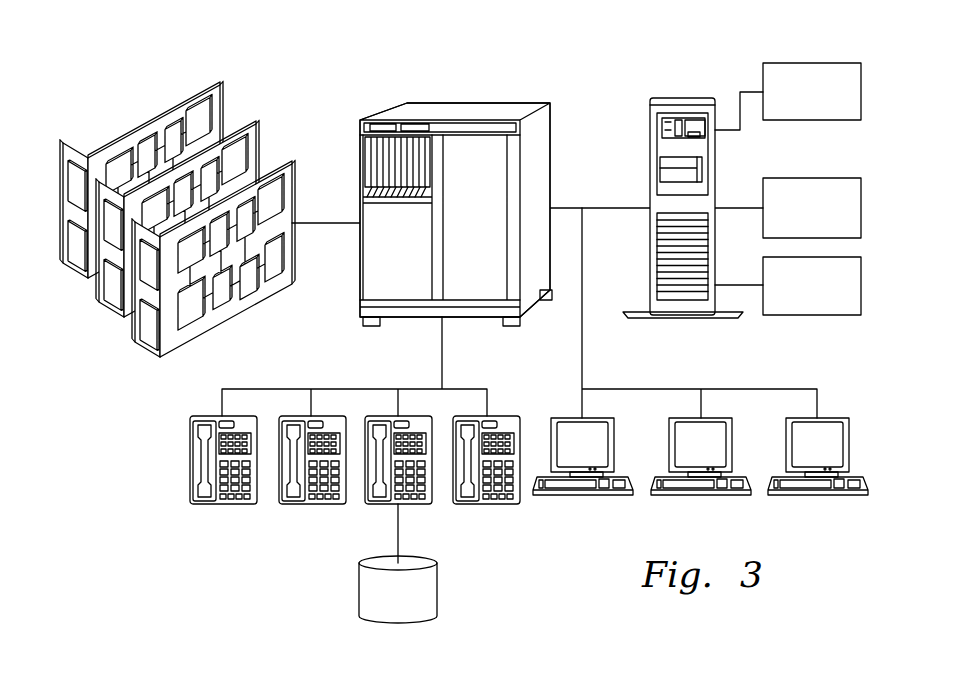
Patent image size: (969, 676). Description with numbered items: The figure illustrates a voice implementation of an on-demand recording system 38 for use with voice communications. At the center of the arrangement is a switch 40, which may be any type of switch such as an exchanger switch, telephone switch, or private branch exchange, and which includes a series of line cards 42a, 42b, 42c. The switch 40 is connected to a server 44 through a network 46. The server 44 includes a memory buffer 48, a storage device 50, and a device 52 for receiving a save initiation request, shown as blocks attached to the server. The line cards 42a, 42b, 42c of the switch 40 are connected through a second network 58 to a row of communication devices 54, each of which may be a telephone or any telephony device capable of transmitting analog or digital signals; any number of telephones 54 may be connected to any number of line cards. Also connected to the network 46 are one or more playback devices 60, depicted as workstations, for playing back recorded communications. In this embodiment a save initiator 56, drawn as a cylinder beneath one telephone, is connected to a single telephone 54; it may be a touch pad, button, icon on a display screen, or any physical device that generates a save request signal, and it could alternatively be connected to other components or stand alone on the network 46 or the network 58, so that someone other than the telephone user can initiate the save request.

The on-demand recording system 38 is at (597, 96).
The switch 40 is at (483, 110).
The line card 42a is at (221, 101).
The line card 42b is at (257, 140).
The line card 42c is at (293, 180).
The server 44 is at (685, 98).
The network 46 is at (582, 345).
The memory buffer 48 is at (810, 63).
The storage device 50 is at (810, 178).
The device for receiving a save initiation request 52 is at (812, 315).
The communication device 54 is at (222, 505).
The save initiator 56 is at (359, 590).
The network 58 is at (443, 352).
The playback device 60 is at (585, 497).